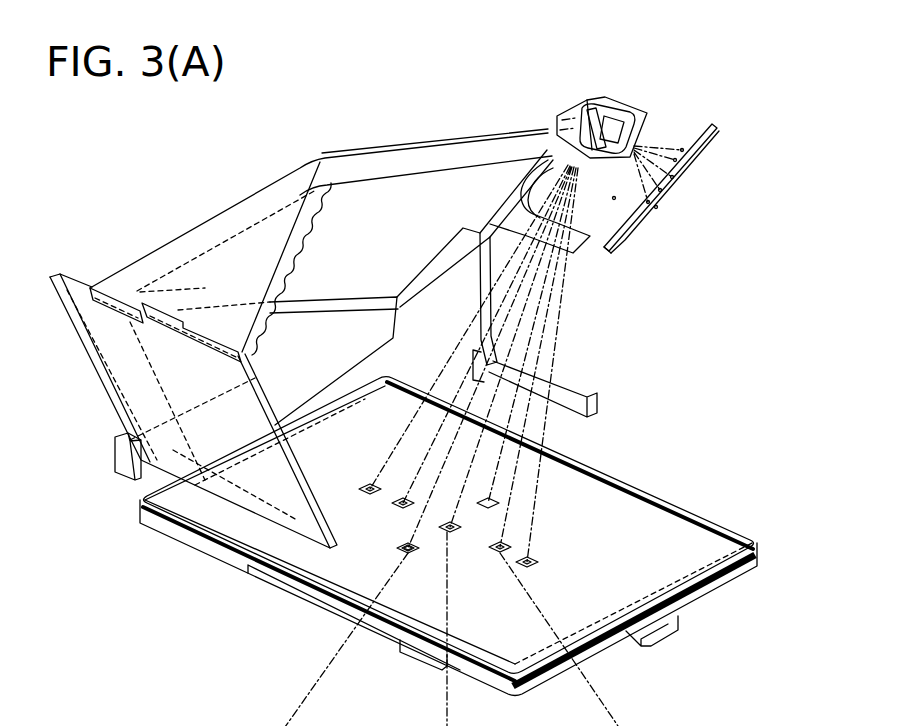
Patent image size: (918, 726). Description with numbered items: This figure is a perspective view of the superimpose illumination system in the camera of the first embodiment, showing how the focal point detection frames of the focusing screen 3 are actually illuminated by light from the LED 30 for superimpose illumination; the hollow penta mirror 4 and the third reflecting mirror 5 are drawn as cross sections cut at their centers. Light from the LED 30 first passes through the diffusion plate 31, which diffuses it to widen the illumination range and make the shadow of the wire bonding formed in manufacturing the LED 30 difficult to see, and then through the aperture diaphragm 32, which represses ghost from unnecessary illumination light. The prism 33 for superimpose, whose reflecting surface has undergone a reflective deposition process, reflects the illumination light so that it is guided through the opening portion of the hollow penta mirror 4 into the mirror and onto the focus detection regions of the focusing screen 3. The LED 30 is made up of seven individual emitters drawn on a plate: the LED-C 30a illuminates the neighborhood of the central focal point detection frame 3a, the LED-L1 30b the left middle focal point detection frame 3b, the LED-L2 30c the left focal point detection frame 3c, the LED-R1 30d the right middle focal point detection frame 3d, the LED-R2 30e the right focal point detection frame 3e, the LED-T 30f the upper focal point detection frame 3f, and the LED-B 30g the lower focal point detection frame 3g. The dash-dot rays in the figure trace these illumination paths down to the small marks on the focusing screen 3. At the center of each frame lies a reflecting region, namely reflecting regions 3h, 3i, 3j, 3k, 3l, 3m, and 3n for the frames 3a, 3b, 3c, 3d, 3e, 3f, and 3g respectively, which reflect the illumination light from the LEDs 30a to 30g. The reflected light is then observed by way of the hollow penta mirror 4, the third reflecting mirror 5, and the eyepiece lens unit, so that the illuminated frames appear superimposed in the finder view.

The focusing screen 3 is at (287, 587).
The central focal point detection frame 3a is at (440, 527).
The left middle focal point detection frame 3b is at (393, 505).
The left focal point detection frame 3c is at (362, 489).
The right middle focal point detection frame 3d is at (505, 546).
The right focal point detection frame 3e is at (535, 562).
The upper focal point detection frame 3f is at (400, 548).
The lower focal point detection frame 3g is at (499, 504).
The reflecting region 3h is at (437, 548).
The reflecting region 3i is at (402, 499).
The reflecting region 3j is at (371, 486).
The reflecting region 3k is at (498, 560).
The reflecting region 3l is at (530, 568).
The reflecting region 3m is at (405, 554).
The reflecting region 3n is at (461, 531).
The hollow penta mirror 4 is at (224, 218).
The third reflecting mirror 5 is at (125, 388).
The LED for superimpose illumination 30 is at (708, 136).
The LED-C 30a is at (662, 190).
The LED-L1 30b is at (677, 161).
The LED-L2 30c is at (684, 150).
The LED-R1 30d is at (650, 202).
The LED-R2 30e is at (656, 209).
The LED-T 30f is at (674, 177).
The LED-B 30g is at (615, 199).
The diffusion plate 31 is at (683, 127).
The aperture diaphragm 32 is at (650, 113).
The prism for superimpose 33 is at (557, 118).